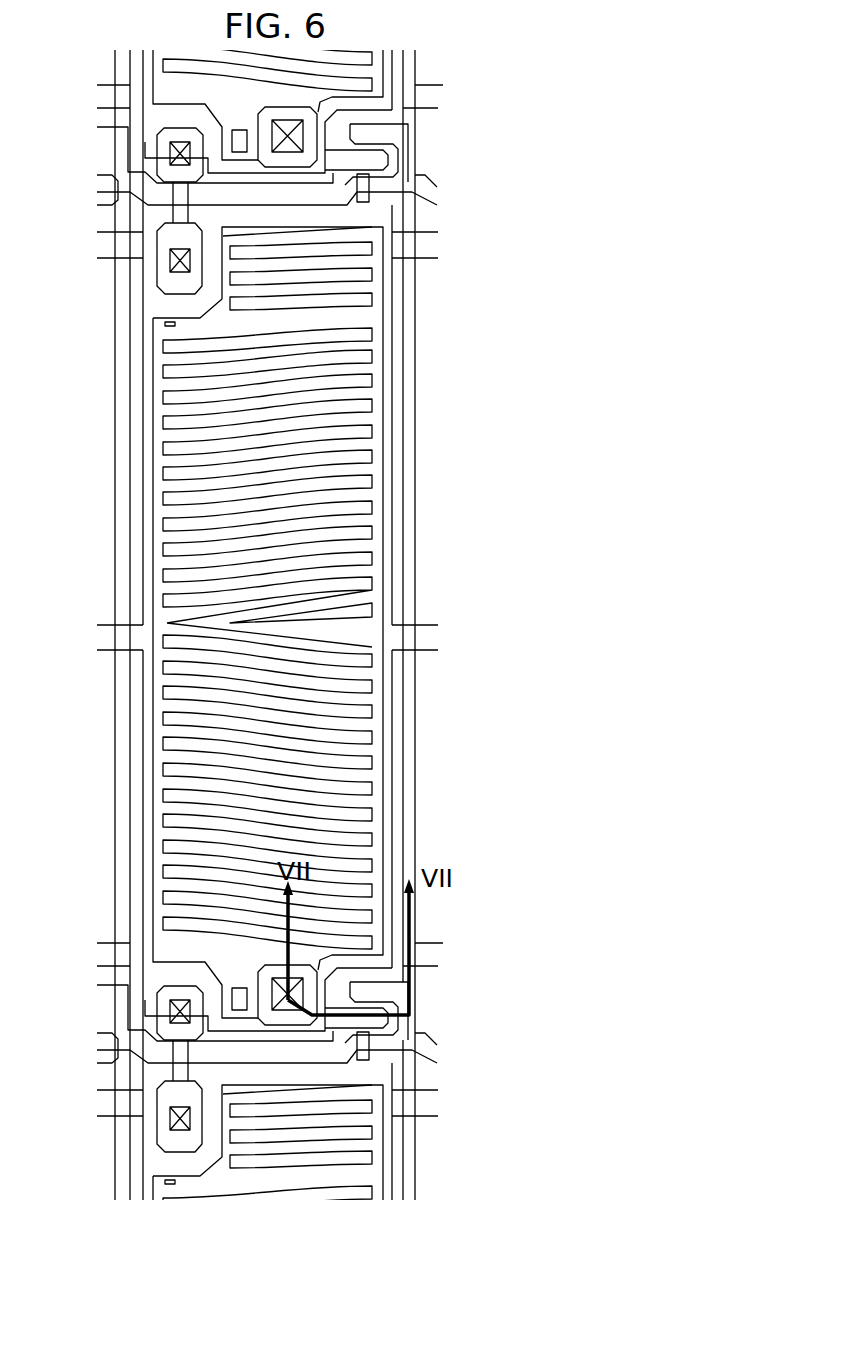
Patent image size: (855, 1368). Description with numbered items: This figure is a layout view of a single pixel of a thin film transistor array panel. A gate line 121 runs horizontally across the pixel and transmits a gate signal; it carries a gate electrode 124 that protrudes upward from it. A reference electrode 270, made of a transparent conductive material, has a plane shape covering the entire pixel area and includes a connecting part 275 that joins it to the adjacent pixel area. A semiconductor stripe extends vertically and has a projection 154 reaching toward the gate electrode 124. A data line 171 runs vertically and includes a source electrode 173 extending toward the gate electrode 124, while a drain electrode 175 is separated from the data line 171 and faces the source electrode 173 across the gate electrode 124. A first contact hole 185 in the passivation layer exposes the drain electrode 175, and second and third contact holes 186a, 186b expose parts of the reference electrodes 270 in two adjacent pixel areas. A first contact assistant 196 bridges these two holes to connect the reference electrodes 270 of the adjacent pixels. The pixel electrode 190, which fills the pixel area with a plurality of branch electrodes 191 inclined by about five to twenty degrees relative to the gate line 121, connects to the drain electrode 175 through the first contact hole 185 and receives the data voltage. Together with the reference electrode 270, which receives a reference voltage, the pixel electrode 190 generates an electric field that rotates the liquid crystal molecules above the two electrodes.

The gate line 121 is at (238, 1063).
The gate electrode 124 is at (390, 1013).
The projection 154 is at (366, 1060).
The data line 171 is at (403, 707).
The source electrode 173 is at (410, 982).
The drain electrode 175 is at (262, 972).
The first contact hole 185 is at (298, 975).
The second contact hole 186a is at (170, 1012).
The third contact hole 186b is at (170, 1113).
The pixel electrode 190 is at (381, 349).
The branch electrode 191 is at (385, 432).
The first contact assistant 196 is at (178, 1062).
The reference electrode 270 is at (392, 515).
The connecting part 275 is at (410, 624).